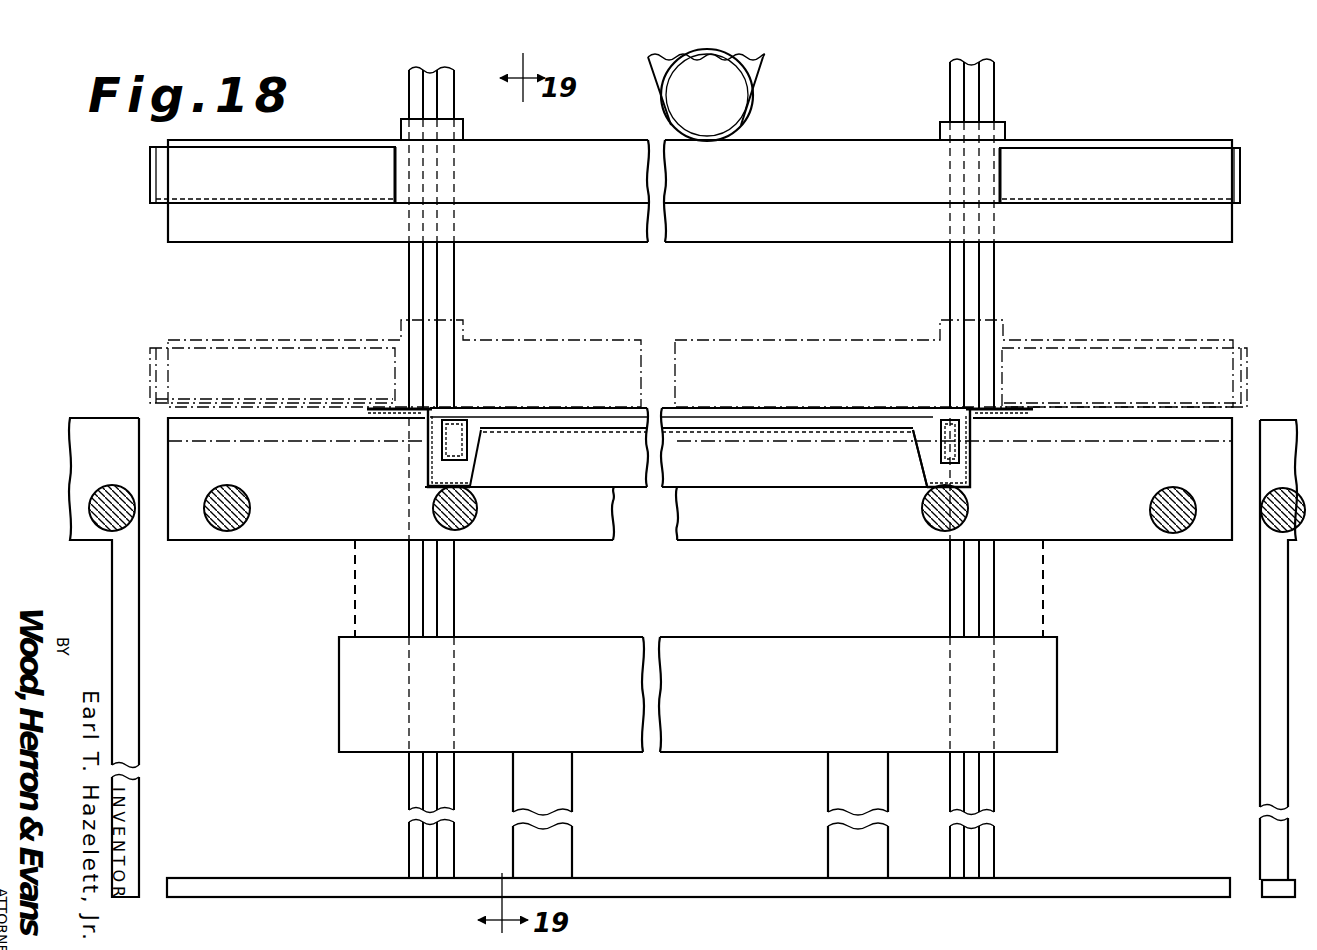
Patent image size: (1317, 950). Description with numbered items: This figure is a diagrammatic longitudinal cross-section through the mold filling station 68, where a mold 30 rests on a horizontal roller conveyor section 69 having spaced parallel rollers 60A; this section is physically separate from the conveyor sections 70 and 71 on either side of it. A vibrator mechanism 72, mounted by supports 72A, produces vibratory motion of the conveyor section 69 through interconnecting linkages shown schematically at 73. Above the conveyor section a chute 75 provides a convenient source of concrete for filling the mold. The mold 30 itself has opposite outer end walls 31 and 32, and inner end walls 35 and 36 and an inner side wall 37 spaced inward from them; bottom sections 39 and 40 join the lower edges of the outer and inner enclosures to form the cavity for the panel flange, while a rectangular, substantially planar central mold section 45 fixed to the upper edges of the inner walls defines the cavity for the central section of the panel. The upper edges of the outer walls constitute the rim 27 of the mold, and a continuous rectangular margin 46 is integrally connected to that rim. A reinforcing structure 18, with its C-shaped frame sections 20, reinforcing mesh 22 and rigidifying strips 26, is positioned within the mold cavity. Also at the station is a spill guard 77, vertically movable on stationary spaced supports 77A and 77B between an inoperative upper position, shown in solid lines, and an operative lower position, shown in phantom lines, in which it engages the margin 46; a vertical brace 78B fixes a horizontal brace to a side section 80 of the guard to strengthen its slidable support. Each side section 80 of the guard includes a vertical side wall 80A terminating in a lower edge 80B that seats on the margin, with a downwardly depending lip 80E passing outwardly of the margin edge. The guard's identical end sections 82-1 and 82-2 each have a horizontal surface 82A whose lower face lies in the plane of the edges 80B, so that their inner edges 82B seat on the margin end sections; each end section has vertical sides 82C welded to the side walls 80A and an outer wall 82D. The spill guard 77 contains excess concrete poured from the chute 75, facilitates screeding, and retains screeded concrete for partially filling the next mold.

The reinforcing structure 18 is at (484, 416).
The C-shaped frame section 20 is at (536, 457).
The reinforcing mesh 22 is at (701, 429).
The rigidifying strip 26 is at (416, 452).
The rim 27 is at (927, 417).
The mold 30 is at (796, 504).
The outer end wall 31 is at (403, 502).
The outer end wall 32 is at (983, 448).
The inner end wall 35 is at (486, 502).
The inner end wall 36 is at (902, 480).
The inner side wall 37 is at (786, 451).
The bottom section 39 is at (421, 511).
The bottom section 40 is at (975, 508).
The central mold section 45 is at (796, 429).
The margin 46 is at (708, 445).
The rollers 60A is at (692, 514).
The mold filling station 68 is at (625, 228).
The horizontal roller conveyor section 69 is at (700, 507).
The conveyor section 70 is at (83, 649).
The conveyor section 71 is at (1278, 642).
The vibrator mechanism 72 is at (698, 675).
The supports 72A is at (700, 815).
The interconnecting linkages 73 is at (708, 588).
The chute 75 is at (731, 95).
The spill guard 77 is at (817, 470).
The vertical support 77A is at (461, 472).
The vertical support 77B is at (1000, 468).
The vertical brace 78B is at (707, 113).
The cover bar 80 is at (700, 327).
The vertical side wall 80A is at (832, 166).
The lower edge 80B is at (700, 191).
The downwardly depending lip 80E is at (948, 253).
The horizontal surface 82A is at (698, 277).
The inner edge 82B is at (709, 214).
The vertical side 82C is at (700, 227).
The outer wall 82D is at (691, 273).
The end section 82-1 is at (109, 254).
The end section 82-2 is at (1264, 235).